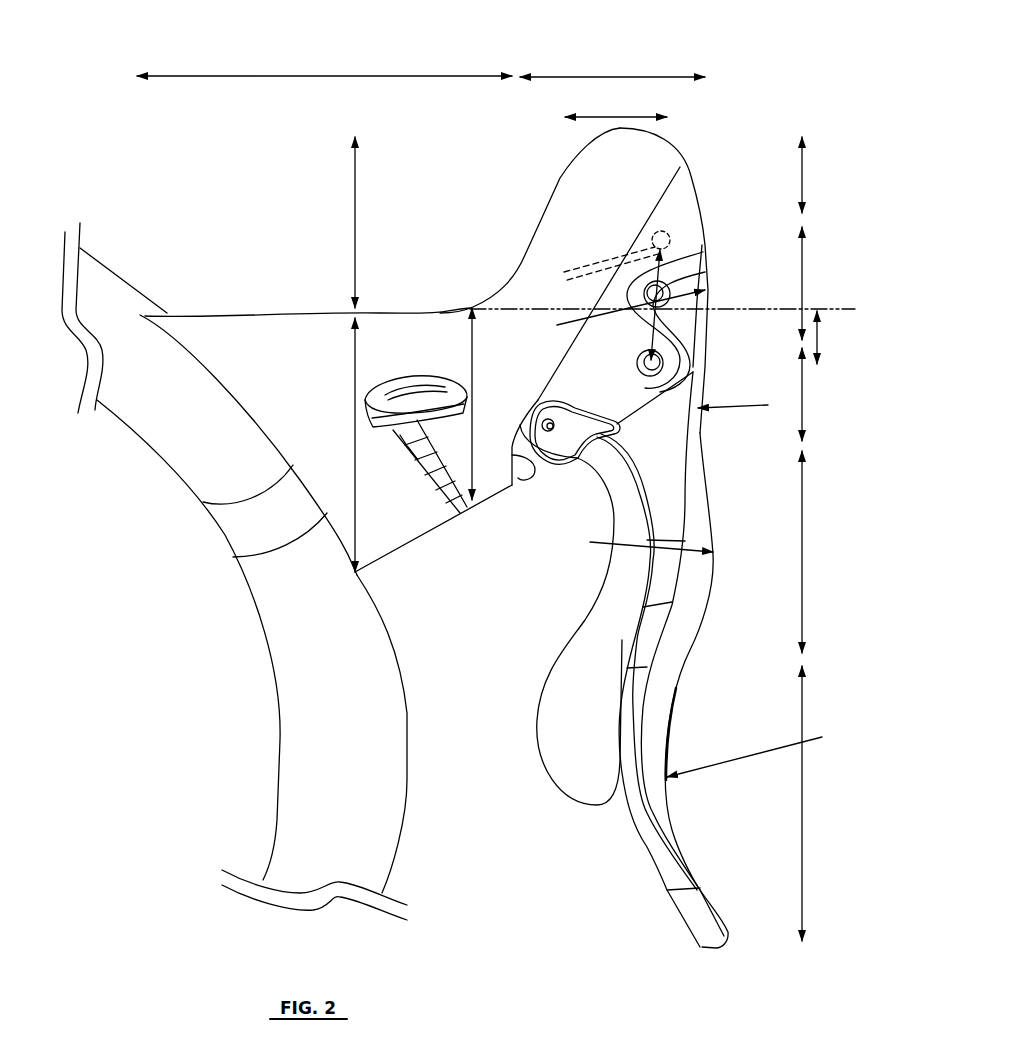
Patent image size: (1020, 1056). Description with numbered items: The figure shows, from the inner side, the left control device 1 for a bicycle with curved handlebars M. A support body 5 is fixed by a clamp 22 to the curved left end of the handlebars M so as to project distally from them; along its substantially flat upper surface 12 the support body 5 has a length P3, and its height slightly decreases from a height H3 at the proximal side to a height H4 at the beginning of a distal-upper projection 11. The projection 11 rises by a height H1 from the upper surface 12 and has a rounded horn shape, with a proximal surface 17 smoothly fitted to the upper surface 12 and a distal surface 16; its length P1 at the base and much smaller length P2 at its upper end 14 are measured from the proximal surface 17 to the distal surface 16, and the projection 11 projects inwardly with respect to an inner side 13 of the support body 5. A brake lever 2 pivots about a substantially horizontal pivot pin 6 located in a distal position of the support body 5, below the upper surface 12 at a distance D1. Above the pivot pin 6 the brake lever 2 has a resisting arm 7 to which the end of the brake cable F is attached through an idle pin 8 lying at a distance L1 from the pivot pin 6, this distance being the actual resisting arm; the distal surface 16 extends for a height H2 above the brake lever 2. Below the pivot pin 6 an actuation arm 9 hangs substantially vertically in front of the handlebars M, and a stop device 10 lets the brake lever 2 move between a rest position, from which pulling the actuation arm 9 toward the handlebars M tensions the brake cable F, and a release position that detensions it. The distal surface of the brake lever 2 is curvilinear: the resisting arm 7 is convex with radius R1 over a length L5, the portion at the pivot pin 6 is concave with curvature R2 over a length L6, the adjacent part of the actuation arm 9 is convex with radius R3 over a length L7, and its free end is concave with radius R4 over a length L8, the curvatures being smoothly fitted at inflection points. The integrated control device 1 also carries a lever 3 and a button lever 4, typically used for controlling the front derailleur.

The control device 1 is at (528, 474).
The brake lever 2 is at (628, 660).
The lever 3 is at (556, 735).
The button lever 4 is at (440, 395).
The support body 5 is at (528, 517).
The pivot pin 6 is at (654, 359).
The resisting arm 7 is at (685, 320).
The idle pin 8 is at (669, 236).
The actuation arm 9 is at (668, 660).
The stop device 10 is at (672, 278).
The distal-upper projection 11 is at (647, 286).
The upper surface 12 is at (311, 308).
The inner side 13 is at (416, 357).
The upper end 14 is at (632, 130).
The distal surface 16 is at (683, 168).
The proximal surface 17 is at (545, 212).
The clamp 22 is at (255, 508).
The handlebars M is at (152, 418).
The brake cable F is at (572, 262).
The length of projection at base P1 is at (612, 66).
The length of projection at upper end P2 is at (616, 104).
The length of support body P3 is at (324, 66).
The height of projection H1 is at (369, 222).
The height of distal surface above brake lever H2 is at (820, 175).
The height at proximal side H3 is at (339, 445).
The height at beginning of projection H4 is at (490, 404).
The distance between idle pin and pivot pin L1 is at (643, 305).
The length of convex resisting arm portion L5 is at (817, 283).
The length of concave pivot portion L6 is at (816, 394).
The length of convex actuation arm portion L7 is at (815, 552).
The length of concave free end portion L8 is at (815, 803).
The distance of pivot pin below upper surface D1 is at (832, 337).
The radius of curvature of resisting arm R1 is at (662, 324).
The curvature at pivot pin R2 is at (733, 397).
The radius of curvature of actuation arm near pivot R3 is at (632, 540).
The radius of curvature of free end R4 is at (744, 750).